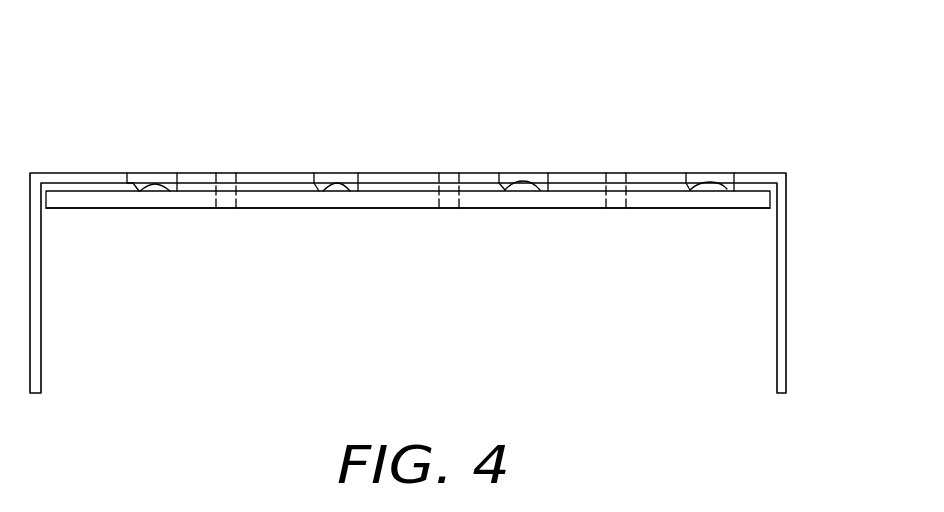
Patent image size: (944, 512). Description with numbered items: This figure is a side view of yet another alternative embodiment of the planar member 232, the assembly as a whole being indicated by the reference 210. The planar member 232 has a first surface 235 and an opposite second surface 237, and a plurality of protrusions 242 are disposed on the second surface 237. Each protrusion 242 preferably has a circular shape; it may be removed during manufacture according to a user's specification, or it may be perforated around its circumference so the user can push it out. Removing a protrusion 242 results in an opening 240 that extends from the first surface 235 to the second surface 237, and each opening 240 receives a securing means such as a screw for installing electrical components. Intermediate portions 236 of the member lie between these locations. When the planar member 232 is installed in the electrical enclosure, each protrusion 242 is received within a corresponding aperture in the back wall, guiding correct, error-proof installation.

The circuit board assembly / frame 210 is at (431, 216).
The planar member 232 is at (741, 222).
The first surface 235 is at (60, 209).
The strip segments 236 is at (224, 183).
The second surface 237 is at (86, 173).
The opening 240 is at (222, 209).
The protrusion 242 is at (153, 184).